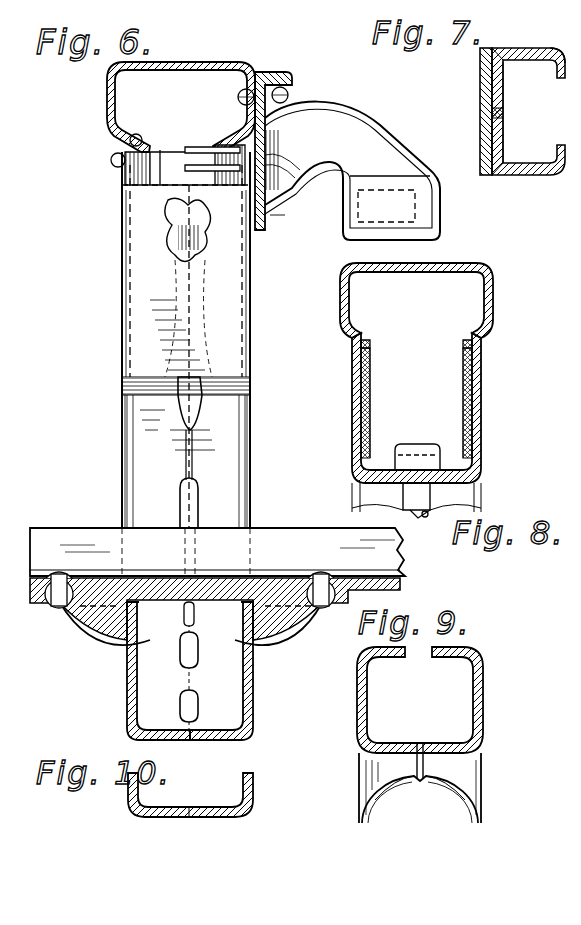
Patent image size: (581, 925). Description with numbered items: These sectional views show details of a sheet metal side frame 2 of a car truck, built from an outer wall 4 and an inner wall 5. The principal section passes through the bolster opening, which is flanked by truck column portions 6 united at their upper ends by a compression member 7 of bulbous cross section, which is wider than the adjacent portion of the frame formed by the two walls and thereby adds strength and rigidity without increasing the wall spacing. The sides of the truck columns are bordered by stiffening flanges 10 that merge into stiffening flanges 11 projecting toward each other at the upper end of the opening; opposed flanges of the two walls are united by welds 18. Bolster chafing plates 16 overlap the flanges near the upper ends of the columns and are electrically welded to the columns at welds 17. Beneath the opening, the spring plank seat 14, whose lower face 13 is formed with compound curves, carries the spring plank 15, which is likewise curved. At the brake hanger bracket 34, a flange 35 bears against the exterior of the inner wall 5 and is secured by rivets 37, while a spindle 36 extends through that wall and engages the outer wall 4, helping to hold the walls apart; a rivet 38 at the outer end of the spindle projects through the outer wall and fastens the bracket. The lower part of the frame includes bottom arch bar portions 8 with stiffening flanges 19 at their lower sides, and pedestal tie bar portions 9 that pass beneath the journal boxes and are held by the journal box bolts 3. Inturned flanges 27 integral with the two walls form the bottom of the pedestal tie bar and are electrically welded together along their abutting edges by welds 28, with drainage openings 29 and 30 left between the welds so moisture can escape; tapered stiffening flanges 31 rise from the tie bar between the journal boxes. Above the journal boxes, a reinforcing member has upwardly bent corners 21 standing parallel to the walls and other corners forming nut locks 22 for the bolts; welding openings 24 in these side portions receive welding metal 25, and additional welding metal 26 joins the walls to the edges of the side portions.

In FIG. 6, the side frame 2 is at (122, 432).
In FIG. 7, the side frame 2 is at (548, 175).
In FIG. 8, the side frame 2 is at (481, 484).
In FIG. 8, the journal box bolts 3 is at (426, 518).
In FIG. 6, the outer wall 4 is at (127, 686).
In FIG. 6, the inner wall 5 is at (253, 686).
In FIG. 7, the truck column portions 6 is at (545, 55).
In FIG. 6, the compression member 7 is at (108, 92).
In FIG. 8, the compression member 7 is at (488, 278).
In FIG. 9, the bottom arch bar portions 8 is at (357, 763).
In FIG. 10, the pedestal tie bar portions 9 is at (130, 810).
In FIG. 6, the stiffening flanges 10 is at (145, 484).
In FIG. 7, the stiffening flanges 10 is at (505, 97).
In FIG. 6, the stiffening flanges 11 is at (218, 146).
In FIG. 6, the lower face 13 is at (215, 604).
In FIG. 6, the spring plank seat 14 is at (38, 600).
In FIG. 6, the spring plank 15 is at (290, 548).
In FIG. 6, the bolster chafing plates 16 is at (228, 282).
In FIG. 7, the bolster chafing plates 16 is at (480, 118).
In FIG. 7, the welds 17 is at (497, 52).
In FIG. 6, the welds 18 is at (178, 255).
In FIG. 7, the welds 18 is at (504, 113).
In FIG. 9, the welds 18 is at (425, 771).
In FIG. 9, the stiffening flanges 19 is at (440, 780).
In FIG. 8, the corners 21 is at (352, 442).
In FIG. 8, the nut locks 22 is at (447, 460).
In FIG. 8, the welding openings 24 is at (463, 372).
In FIG. 8, the welding metal 25 is at (462, 385).
In FIG. 8, the welding metal 26 is at (462, 340).
In FIG. 6, the inturned flanges 27 is at (160, 735).
In FIG. 10, the inturned flanges 27 is at (215, 807).
In FIG. 6, the welds 28 is at (198, 636).
In FIG. 6, the drainage openings 29 is at (184, 618).
In FIG. 6, the drainage openings 30 is at (182, 694).
In FIG. 10, the tapered stiffening flanges 31 is at (253, 778).
In FIG. 6, the brake hanger bracket 34 is at (355, 135).
In FIG. 6, the flange 35 is at (268, 204).
In FIG. 6, the spindle 36 is at (183, 175).
In FIG. 6, the rivets 37 is at (240, 100).
In FIG. 6, the rivet 38 is at (114, 164).